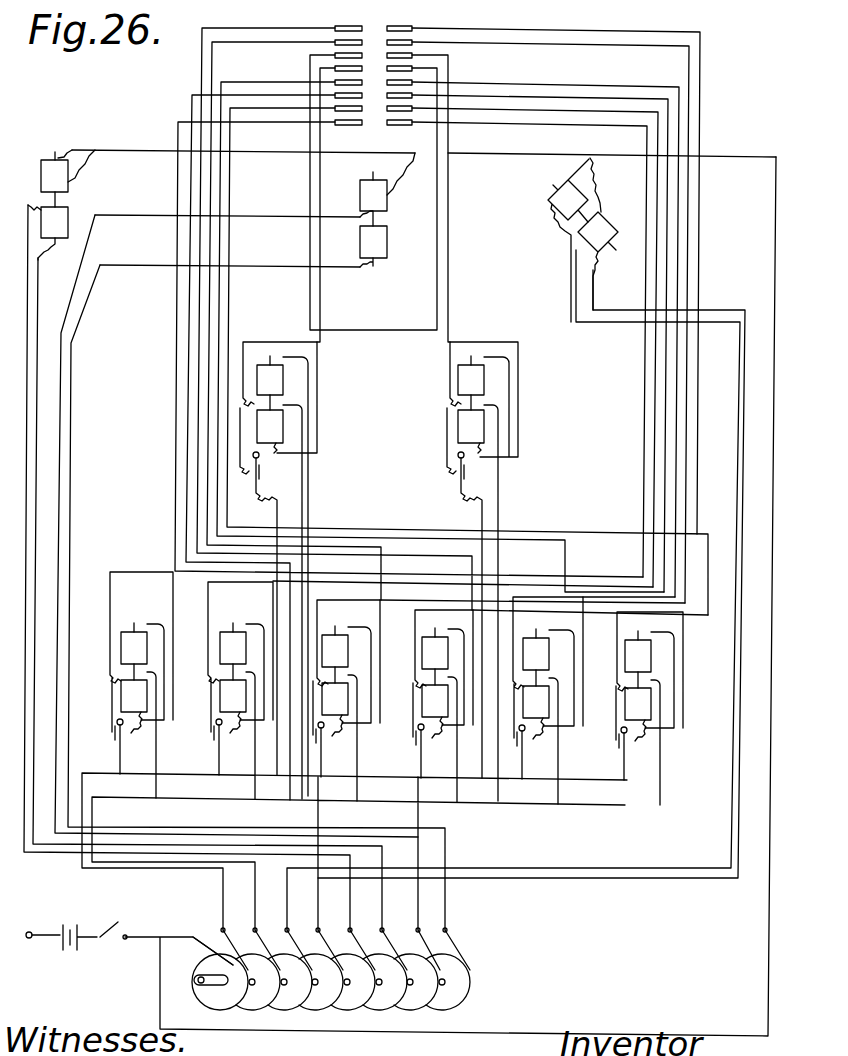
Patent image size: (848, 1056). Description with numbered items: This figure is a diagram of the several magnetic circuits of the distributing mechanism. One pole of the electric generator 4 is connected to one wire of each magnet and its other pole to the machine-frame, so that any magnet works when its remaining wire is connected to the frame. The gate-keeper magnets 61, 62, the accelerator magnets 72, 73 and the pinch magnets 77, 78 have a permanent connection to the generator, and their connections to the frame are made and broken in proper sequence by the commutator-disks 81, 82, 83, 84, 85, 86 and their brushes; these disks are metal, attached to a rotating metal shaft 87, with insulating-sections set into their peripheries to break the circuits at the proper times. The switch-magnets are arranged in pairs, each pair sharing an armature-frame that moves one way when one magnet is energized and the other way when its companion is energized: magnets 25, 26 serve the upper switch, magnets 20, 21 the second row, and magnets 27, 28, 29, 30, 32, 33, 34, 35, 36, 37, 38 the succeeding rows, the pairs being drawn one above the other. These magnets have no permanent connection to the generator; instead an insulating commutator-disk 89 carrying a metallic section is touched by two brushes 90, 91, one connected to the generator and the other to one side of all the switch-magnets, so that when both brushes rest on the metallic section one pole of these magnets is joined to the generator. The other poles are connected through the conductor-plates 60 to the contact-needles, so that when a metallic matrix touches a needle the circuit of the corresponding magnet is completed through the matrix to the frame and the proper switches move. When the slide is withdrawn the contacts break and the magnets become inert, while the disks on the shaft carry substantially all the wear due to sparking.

The conductor-plates 60 is at (359, 28).
The pinch-magnet 77 is at (68, 178).
The companion pinch-magnet 78 is at (48, 232).
The accelerator-magnet 72 is at (387, 189).
The companion accelerator-magnet 73 is at (373, 246).
The gate-keeper magnet 61 is at (568, 240).
The companion gate-keeper magnet 62 is at (598, 234).
The switch-magnet 27 is at (278, 569).
The switch-magnet 28 is at (277, 602).
The switch-magnet 29 is at (482, 408).
The switch-magnet 30 is at (478, 603).
The switch-magnet 35 is at (141, 652).
The switch-magnet 36 is at (135, 735).
The switch-magnet 37 is at (445, 661).
The switch-magnet 32 is at (234, 735).
The switch-magnet 38 is at (639, 742).
The switch-magnet 25 is at (346, 667).
The switch-magnet 26 is at (336, 738).
The electromagnet 20 is at (443, 673).
The electromagnet 21 is at (436, 739).
The switch-magnet 33 is at (548, 667).
The switch-magnet 34 is at (537, 741).
The electric generator 4 is at (76, 923).
The brush 91 is at (222, 930).
The brush 90 is at (200, 950).
The commutator-disk 89 is at (198, 975).
The rotating metal shaft 87 is at (210, 985).
The commutator-disk 81 is at (293, 1010).
The commutator-disk 82 is at (325, 1010).
The commutator-disk 85 is at (357, 1010).
The commutator-disk 86 is at (389, 1010).
The commutator-disk 83 is at (420, 1010).
The commutator-disk 84 is at (468, 996).